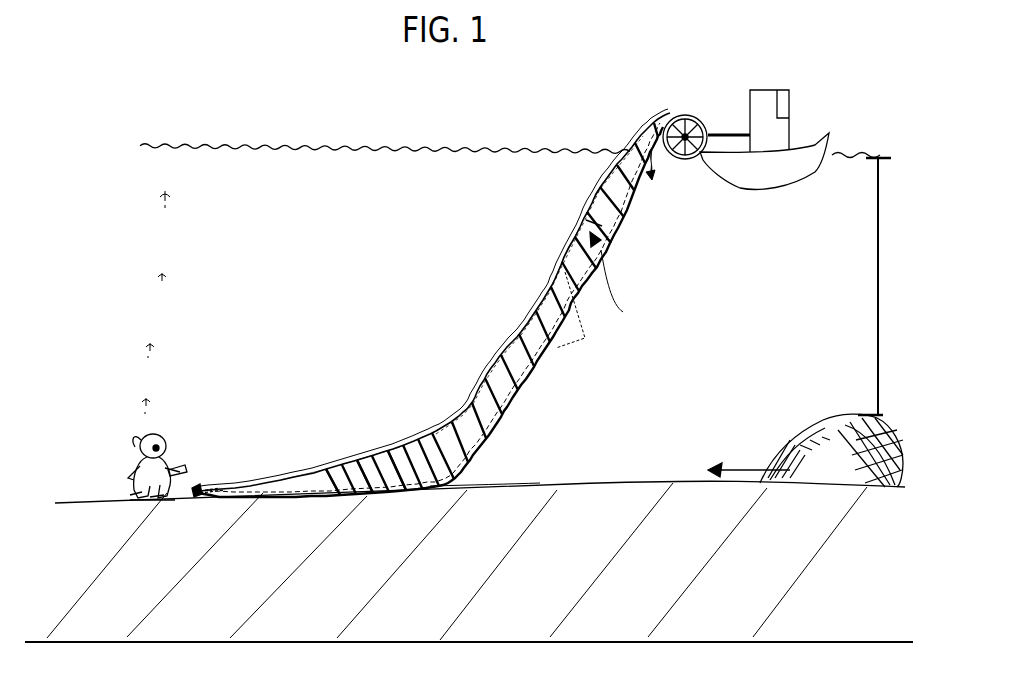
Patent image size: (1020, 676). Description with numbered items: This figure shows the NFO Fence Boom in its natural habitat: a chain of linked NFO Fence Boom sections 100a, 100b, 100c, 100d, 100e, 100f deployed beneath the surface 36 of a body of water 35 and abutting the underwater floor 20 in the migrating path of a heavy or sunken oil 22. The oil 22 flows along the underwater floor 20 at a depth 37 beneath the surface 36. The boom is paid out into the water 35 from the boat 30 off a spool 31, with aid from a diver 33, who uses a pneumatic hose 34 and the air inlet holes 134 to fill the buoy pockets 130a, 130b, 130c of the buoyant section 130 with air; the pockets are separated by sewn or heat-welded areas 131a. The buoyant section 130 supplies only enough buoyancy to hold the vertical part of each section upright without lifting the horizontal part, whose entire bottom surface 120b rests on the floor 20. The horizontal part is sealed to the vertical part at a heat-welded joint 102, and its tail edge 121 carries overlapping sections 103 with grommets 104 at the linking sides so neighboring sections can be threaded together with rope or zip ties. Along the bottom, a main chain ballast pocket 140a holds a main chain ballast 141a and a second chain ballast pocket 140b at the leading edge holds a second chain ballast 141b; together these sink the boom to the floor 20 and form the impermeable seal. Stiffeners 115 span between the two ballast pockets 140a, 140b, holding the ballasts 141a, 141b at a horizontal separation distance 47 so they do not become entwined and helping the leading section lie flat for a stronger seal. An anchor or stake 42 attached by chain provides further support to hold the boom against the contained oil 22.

The underwater floor 20 is at (290, 576).
The heavy or sunken oil 22 is at (805, 450).
The boat 30 is at (745, 186).
The spool 31 is at (702, 128).
The diver 33 is at (130, 462).
The pneumatic hose 34 is at (184, 471).
The water 35 is at (748, 349).
The surface 36 is at (140, 148).
The depth 37 is at (878, 300).
The anchor or stake 42 is at (197, 497).
The horizontal separation distance 47 is at (594, 223).
The NFO Fence Boom section 100a is at (302, 496).
The NFO Fence Boom section 100b is at (381, 492).
The NFO Fence Boom section 100c is at (485, 480).
The NFO Fence Boom section 100d is at (535, 352).
The NFO Fence Boom section 100e is at (582, 245).
The NFO Fence Boom section 100f is at (621, 181).
The joint 102 is at (582, 280).
The overlapping section 103 is at (395, 455).
The grommet 104 is at (412, 466).
The stiffener 115 is at (587, 319).
The bottom surface 120b is at (623, 312).
The tail edge 121 is at (614, 236).
The buoyant section 130 is at (509, 343).
The buoy pocket 130a is at (336, 467).
The buoy pocket 130b is at (366, 459).
The buoy pocket 130c is at (393, 450).
The separation area 131a is at (545, 294).
The air inlet hole 134 is at (205, 491).
The main chain ballast pocket 140a is at (510, 407).
The second chain ballast pocket 140b is at (481, 399).
The main chain ballast 141a is at (505, 412).
The second chain ballast 141b is at (476, 392).